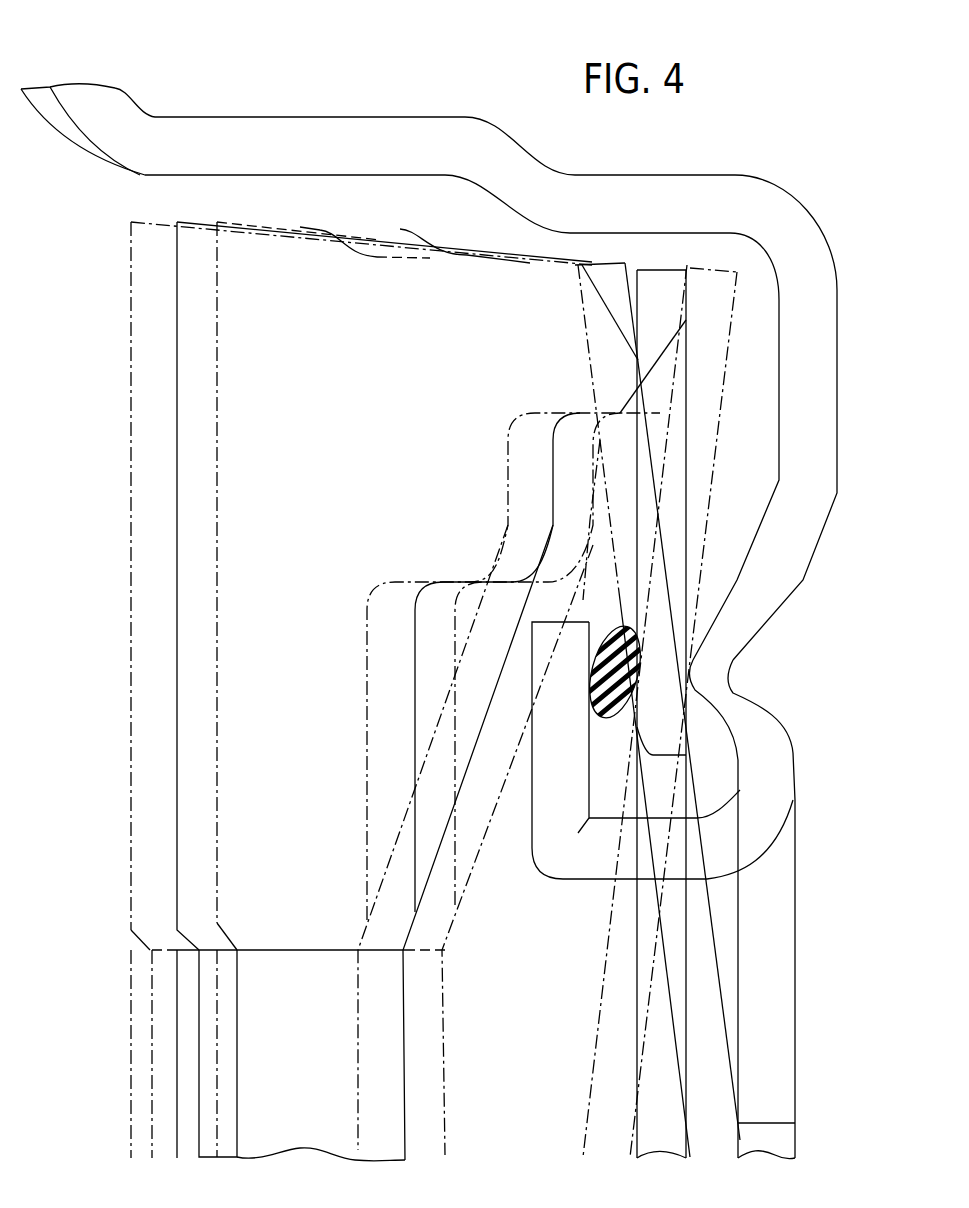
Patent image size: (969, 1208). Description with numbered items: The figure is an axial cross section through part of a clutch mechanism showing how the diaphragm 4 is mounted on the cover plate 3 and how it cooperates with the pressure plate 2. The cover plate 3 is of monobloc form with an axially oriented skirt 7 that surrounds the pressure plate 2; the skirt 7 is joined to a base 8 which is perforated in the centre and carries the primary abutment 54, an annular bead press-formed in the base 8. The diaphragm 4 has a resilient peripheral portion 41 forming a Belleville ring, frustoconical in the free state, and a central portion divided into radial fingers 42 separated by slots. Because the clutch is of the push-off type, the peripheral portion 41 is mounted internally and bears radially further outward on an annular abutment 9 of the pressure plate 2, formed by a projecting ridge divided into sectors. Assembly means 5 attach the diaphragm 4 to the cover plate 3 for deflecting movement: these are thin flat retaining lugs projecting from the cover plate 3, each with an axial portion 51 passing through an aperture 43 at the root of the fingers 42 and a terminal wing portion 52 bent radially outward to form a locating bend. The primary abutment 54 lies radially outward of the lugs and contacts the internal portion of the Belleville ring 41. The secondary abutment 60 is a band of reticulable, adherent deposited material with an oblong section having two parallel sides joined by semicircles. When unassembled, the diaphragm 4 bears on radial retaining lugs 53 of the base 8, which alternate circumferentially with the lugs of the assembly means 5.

The pressure plate 2 is at (418, 295).
The cover plate 3 is at (748, 165).
The diaphragm 4 is at (705, 536).
The assembly means 5 is at (586, 887).
The skirt 7 is at (303, 117).
The base 8 is at (837, 290).
The annular abutment 9 is at (657, 370).
The peripheral portion 41 is at (710, 358).
The radial fingers 42 is at (690, 973).
The apertures 43 is at (720, 795).
The axial portion 51 is at (567, 880).
The terminal wing portion 52 is at (532, 820).
The radial retaining lugs 53 is at (797, 1078).
The primary abutment 54 is at (715, 693).
The secondary abutment 60 is at (617, 720).